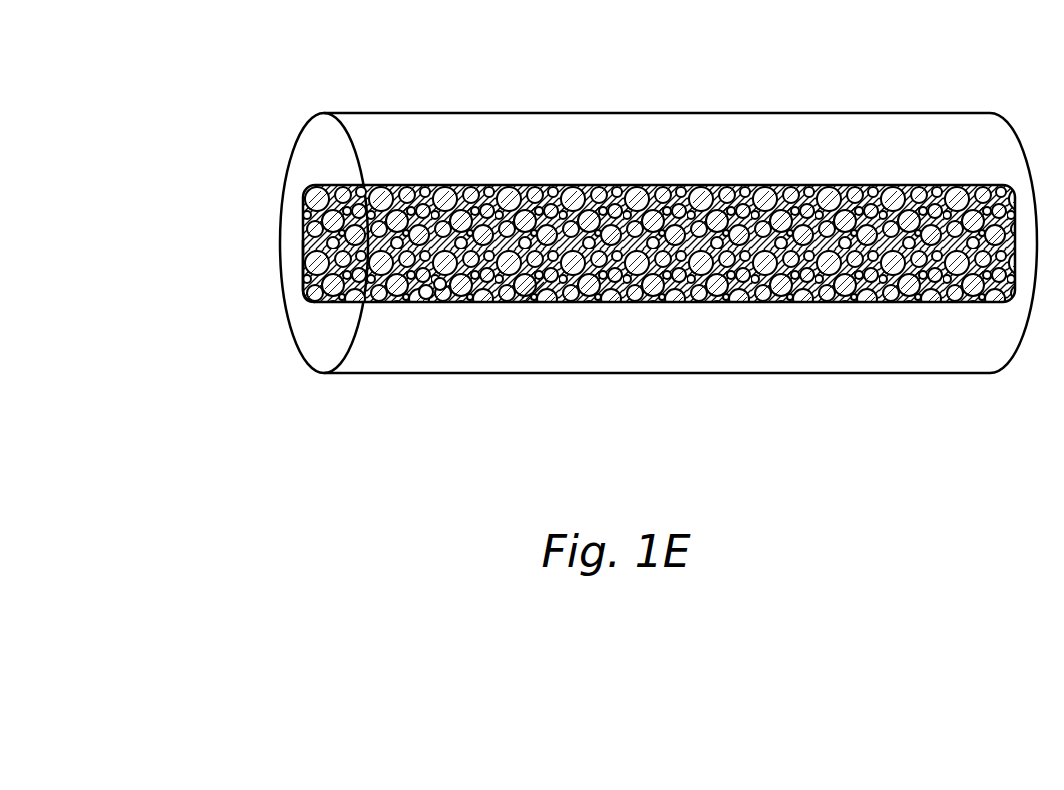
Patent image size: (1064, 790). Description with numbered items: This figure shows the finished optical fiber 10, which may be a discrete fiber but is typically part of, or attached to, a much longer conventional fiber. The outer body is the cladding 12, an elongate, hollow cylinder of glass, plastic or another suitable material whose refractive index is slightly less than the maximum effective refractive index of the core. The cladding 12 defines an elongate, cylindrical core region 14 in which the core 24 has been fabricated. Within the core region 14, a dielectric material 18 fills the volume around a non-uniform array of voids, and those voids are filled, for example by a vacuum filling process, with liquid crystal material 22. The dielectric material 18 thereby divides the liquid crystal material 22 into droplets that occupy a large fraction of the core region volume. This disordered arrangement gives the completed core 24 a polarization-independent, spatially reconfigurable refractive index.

The optical fiber 10 is at (222, 112).
The cladding 12 is at (309, 335).
The core region 14 is at (306, 213).
The dielectric material 18 is at (430, 302).
The liquid crystal material 22 is at (533, 288).
The core 24 is at (307, 289).